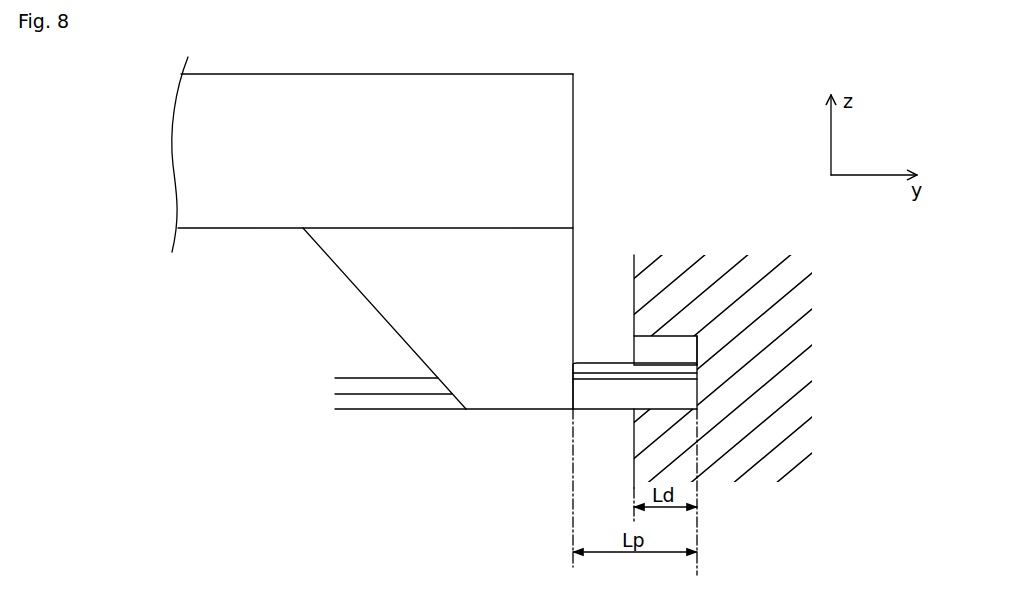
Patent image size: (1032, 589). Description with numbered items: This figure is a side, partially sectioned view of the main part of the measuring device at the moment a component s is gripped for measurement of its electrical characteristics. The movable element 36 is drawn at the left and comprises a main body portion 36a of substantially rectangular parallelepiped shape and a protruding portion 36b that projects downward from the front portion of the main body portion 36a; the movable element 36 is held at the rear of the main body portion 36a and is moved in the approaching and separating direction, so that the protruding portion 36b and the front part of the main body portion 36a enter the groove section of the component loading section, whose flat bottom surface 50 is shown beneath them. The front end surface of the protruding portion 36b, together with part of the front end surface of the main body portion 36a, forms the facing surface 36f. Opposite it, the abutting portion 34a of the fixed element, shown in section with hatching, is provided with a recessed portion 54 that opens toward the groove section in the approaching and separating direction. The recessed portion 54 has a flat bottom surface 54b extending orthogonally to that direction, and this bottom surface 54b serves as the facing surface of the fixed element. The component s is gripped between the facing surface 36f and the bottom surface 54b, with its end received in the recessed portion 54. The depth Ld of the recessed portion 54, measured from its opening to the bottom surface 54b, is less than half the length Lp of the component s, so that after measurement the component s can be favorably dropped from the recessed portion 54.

The movable element 36 is at (232, 242).
The main body portion 36a is at (222, 162).
The protruding portion 36b is at (405, 300).
The facing surface 36f is at (573, 248).
The bottom surface 50 is at (428, 409).
The recessed portion 54 is at (722, 372).
The bottom surface of recessed portion 54b is at (697, 352).
The abutting portion 34a is at (783, 297).
The component s is at (604, 391).